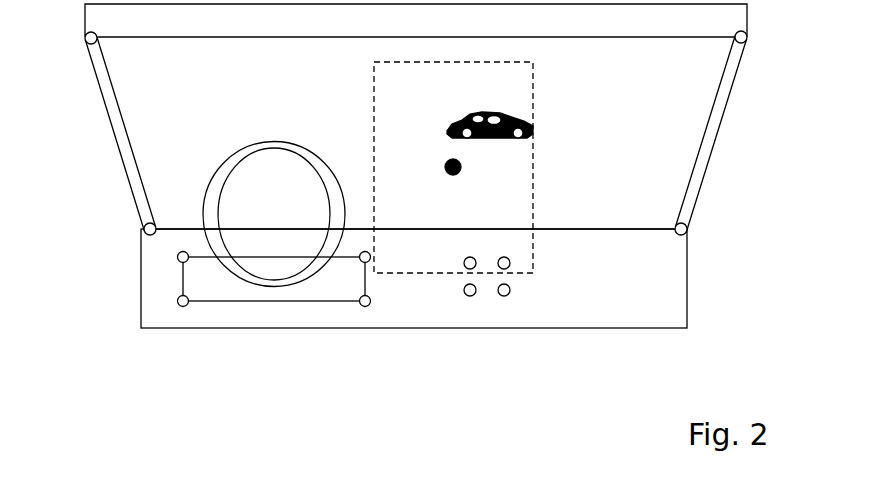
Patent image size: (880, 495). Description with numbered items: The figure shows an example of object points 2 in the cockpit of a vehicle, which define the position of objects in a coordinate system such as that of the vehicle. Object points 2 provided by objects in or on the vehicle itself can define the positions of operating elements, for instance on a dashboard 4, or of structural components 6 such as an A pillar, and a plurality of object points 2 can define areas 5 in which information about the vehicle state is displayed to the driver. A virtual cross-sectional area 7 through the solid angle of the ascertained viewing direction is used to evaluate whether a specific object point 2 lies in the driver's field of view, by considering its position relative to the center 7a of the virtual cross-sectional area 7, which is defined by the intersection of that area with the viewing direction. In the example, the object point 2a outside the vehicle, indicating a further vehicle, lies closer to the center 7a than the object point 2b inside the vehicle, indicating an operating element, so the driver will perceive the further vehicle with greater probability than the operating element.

The object points 2 is at (142, 228).
The object point outside the vehicle 2a is at (493, 138).
The object point inside the vehicle 2b is at (510, 263).
The dashboard 4 is at (618, 229).
The areas 5 is at (335, 290).
The structural components 6 is at (120, 113).
The virtual cross-sectional area 7 is at (535, 72).
The center of the virtual cross-sectional area 7a is at (447, 161).